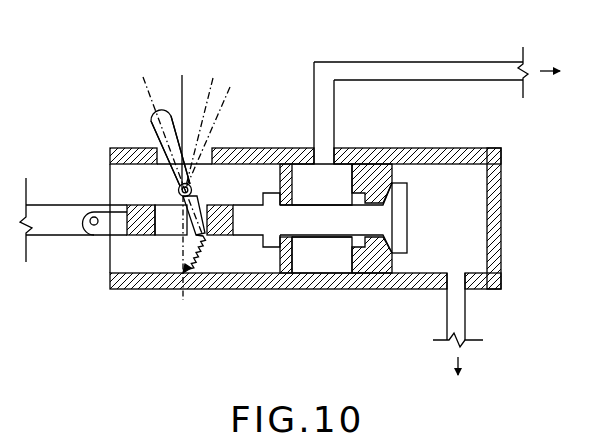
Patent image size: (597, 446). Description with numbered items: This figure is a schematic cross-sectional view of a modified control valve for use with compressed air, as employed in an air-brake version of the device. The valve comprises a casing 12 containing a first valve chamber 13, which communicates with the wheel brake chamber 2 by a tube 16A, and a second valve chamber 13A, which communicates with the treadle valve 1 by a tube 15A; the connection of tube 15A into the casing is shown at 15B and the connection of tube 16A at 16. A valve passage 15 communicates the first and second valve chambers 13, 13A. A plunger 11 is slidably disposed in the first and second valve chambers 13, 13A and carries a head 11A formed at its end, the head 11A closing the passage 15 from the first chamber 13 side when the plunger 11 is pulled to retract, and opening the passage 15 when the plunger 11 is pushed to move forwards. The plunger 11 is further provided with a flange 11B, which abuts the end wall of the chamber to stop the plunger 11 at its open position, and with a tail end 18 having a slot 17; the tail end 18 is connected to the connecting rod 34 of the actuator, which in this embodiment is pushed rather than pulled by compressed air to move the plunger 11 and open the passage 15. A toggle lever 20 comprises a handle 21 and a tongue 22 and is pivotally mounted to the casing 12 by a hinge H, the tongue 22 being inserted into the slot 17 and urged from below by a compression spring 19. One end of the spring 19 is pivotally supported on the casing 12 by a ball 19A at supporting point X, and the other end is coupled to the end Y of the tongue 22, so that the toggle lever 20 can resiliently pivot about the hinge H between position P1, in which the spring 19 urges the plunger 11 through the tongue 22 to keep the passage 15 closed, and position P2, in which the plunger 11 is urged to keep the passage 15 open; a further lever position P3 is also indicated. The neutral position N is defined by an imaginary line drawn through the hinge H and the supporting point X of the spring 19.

The plunger 11 is at (311, 264).
The head 11A is at (407, 193).
The flange 11B is at (271, 196).
The casing 12 is at (502, 290).
The first valve chamber 13 is at (465, 200).
The second valve chamber 13A is at (330, 258).
The valve passage 15 is at (364, 202).
The tube 15A is at (422, 70).
The inlet port 15B is at (323, 157).
The outlet port 16 is at (455, 278).
The tube 16A is at (464, 318).
The slot 17 is at (168, 236).
The tail end 18 is at (125, 236).
The compression spring 19 is at (210, 247).
The ball 19A is at (186, 274).
The toggle lever 20 is at (140, 118).
The handle 21 is at (155, 134).
The tongue 22 is at (194, 200).
The connecting rod 34 is at (52, 234).
The hinge H is at (178, 190).
The neutral position N is at (183, 120).
The position P1 is at (219, 127).
The position P2 is at (165, 144).
The third lever position P3 is at (208, 120).
The supporting point X is at (202, 265).
The end of tongue Y is at (204, 238).
The treadle valve 1 is at (560, 73).
The wheel brake chamber 2 is at (458, 381).